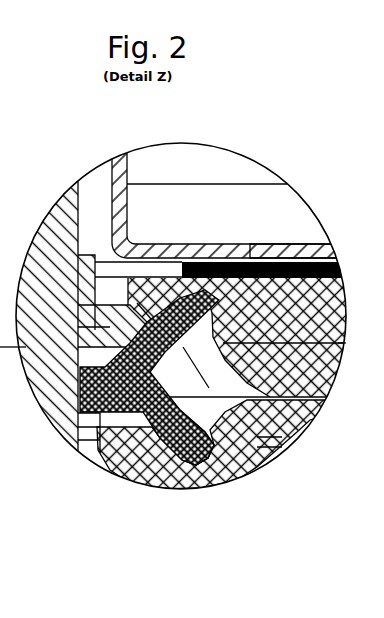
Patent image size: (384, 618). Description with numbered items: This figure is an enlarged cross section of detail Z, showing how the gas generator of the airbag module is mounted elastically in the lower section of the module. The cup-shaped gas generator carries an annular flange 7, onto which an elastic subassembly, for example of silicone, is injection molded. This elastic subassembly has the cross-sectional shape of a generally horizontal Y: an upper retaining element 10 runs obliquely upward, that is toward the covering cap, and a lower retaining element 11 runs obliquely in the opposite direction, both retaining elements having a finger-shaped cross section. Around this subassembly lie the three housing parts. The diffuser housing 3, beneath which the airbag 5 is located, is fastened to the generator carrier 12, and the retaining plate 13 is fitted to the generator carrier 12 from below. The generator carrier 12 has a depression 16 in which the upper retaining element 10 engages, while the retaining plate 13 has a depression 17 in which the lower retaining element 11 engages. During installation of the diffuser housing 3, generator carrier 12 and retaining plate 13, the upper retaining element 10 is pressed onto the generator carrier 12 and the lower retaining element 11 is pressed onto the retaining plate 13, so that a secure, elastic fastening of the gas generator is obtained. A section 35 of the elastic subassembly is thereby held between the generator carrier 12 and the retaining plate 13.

The diffuser housing 3 is at (111, 162).
The airbag 5 is at (321, 252).
The annular flange 7 is at (67, 427).
The upper retaining element 10 is at (190, 244).
The lower retaining element 11 is at (168, 455).
The generator carrier 12 is at (329, 393).
The retaining plate 13 is at (293, 437).
The depression 16 is at (249, 258).
The depression 17 is at (207, 420).
The section 35 is at (99, 447).